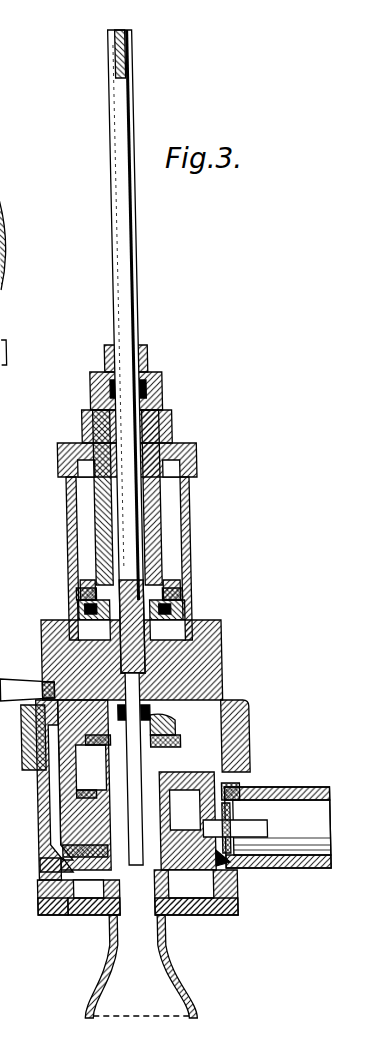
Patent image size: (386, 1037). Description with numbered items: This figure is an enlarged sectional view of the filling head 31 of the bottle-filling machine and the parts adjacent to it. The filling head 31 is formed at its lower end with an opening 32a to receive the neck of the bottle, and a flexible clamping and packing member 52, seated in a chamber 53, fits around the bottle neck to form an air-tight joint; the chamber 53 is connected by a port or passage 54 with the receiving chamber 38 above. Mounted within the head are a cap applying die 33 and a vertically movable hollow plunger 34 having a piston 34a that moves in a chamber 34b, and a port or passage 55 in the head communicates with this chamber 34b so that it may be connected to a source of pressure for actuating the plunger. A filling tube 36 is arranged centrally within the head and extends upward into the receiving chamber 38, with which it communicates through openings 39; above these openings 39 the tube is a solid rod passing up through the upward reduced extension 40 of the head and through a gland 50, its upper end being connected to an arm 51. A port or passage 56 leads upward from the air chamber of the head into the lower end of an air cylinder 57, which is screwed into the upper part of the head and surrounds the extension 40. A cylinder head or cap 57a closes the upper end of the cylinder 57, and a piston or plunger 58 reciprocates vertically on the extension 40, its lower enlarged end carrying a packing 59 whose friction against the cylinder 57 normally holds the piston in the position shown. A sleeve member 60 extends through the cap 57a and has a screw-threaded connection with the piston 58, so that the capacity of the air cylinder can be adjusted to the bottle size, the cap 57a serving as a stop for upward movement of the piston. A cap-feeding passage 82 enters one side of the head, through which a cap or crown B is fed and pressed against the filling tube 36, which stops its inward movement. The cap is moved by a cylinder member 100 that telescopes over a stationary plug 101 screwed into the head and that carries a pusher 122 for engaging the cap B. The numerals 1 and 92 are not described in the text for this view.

The funnel 1 is at (140, 966).
The filling head 31 is at (45, 866).
The opening 32a is at (175, 915).
The cap applying die 33 is at (60, 812).
The hollow plunger 34 is at (60, 796).
The piston 34a is at (190, 744).
The chamber 34b is at (200, 710).
The filling tube 36 is at (122, 868).
The receiving chamber 38 is at (222, 650).
The openings 39 is at (27, 674).
The upward reduced extension 40 is at (100, 522).
The gland 50 is at (100, 380).
The arm 51 is at (115, 58).
The flexible clamping and packing member 52 is at (82, 921).
The chamber 53 is at (47, 917).
The port or passage 54 is at (55, 846).
The port or passage 55 is at (30, 770).
The port or passage 56 is at (109, 562).
The air cylinder 57 is at (80, 592).
The cylinder head or cap 57a is at (197, 457).
The piston or plunger 58 is at (95, 575).
The packing 59 is at (72, 620).
The sleeve member 60 is at (82, 430).
The cap-feeding passage 82 is at (243, 793).
The wheel 92 is at (10, 275).
The cylinder member 100 is at (288, 862).
The stationary plug 101 is at (318, 800).
The pusher 122 is at (262, 828).
The cap or crown B is at (235, 858).